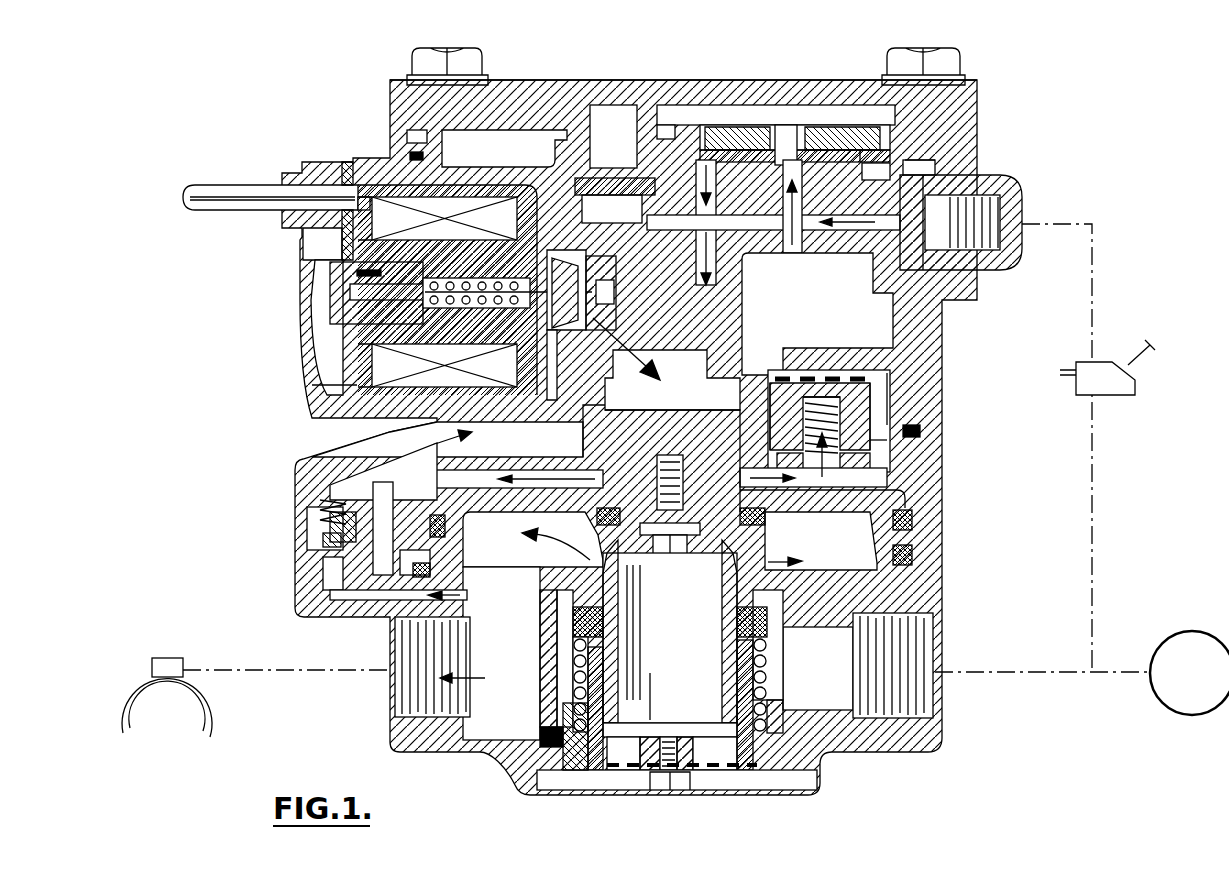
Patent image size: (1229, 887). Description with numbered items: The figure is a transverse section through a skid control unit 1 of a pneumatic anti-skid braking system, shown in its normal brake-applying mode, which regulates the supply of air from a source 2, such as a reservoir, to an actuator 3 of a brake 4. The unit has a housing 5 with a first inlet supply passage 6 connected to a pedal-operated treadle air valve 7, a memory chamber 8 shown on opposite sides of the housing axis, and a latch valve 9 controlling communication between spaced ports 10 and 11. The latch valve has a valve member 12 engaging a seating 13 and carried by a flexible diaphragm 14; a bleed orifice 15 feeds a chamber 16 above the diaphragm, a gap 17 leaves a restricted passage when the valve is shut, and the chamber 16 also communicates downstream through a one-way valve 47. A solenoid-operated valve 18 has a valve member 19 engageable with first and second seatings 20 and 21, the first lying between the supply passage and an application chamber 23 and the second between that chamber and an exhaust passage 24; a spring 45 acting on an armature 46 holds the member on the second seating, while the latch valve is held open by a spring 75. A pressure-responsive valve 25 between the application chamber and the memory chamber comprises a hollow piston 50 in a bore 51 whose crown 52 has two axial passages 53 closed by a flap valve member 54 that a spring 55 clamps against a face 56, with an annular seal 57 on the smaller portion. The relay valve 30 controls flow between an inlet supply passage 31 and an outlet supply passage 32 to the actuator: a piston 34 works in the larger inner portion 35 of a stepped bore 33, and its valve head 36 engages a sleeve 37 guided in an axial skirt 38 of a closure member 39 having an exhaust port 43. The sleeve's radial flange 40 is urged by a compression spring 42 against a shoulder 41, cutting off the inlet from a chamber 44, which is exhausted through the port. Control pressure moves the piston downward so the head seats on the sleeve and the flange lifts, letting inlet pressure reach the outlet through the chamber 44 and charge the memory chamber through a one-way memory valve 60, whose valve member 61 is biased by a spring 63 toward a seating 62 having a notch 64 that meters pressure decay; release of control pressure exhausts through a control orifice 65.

The skid control unit 1 is at (298, 324).
The source 2 is at (1183, 690).
The actuator 3 is at (168, 666).
The brake 4 is at (208, 718).
The housing 5 is at (630, 100).
The first inlet supply passage 6 is at (862, 232).
The pedal-operated treadle air valve 7 is at (1111, 378).
The memory chamber 8 is at (827, 289).
The latch valve 9 is at (840, 142).
The port 10 is at (798, 208).
The port 11 is at (700, 142).
The valve member 12 is at (758, 130).
The seating 13 is at (862, 148).
The flexible diaphragm 14 is at (928, 174).
The bleed orifice 15 is at (800, 140).
The chamber 16 is at (733, 112).
The gap 17 is at (782, 126).
The solenoid-operated valve 18 is at (355, 273).
The valve member 19 is at (444, 365).
The first seating 20 is at (650, 276).
The second seating 21 is at (583, 252).
The application chamber 23 is at (693, 397).
The exhaust passage 24 is at (365, 400).
The pressure-responsive valve 25 is at (920, 431).
The relay valve 30 is at (752, 707).
The inlet supply passage 31 is at (897, 692).
The outlet supply passage 32 is at (420, 690).
The bore 33 is at (913, 546).
The piston 34 is at (882, 504).
The inner portion 35 is at (918, 560).
The valve head 36 is at (765, 531).
The sleeve 37 is at (724, 623).
The axial skirt 38 is at (597, 680).
The closure member 39 is at (583, 752).
The radial flange 40 is at (770, 628).
The shoulder 41 is at (590, 582).
The compression spring 42 is at (597, 660).
The exhaust port 43 is at (627, 750).
The chamber 44 is at (848, 549).
The spring 45 is at (450, 275).
The armature 46 is at (345, 312).
The one-way valve 47 is at (612, 176).
The hollow piston 50 is at (885, 428).
The bore 51 is at (882, 420).
The crown 52 is at (880, 388).
The axially extending passages 53 is at (838, 378).
The flap valve member 54 is at (842, 372).
The spring 55 is at (872, 458).
The face 56 is at (790, 372).
The annular seal 57 is at (872, 402).
The one-way memory valve 60 is at (318, 546).
The valve member 61 is at (327, 528).
The seating 62 is at (317, 560).
The spring 63 is at (333, 510).
The notch 64 is at (332, 584).
The control orifice 65 is at (947, 208).
The spring 75 is at (858, 148).